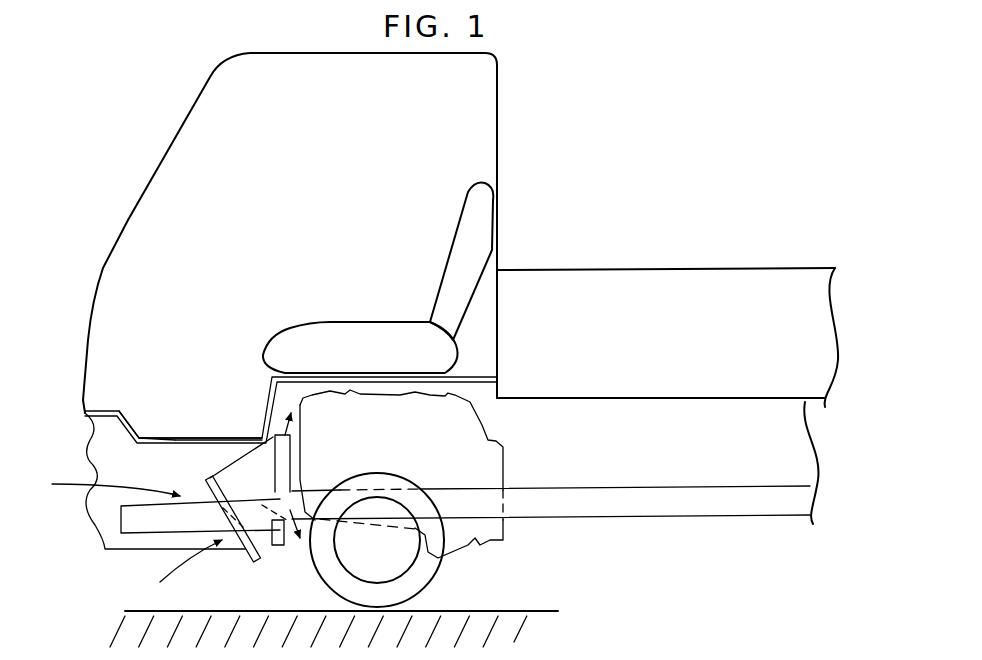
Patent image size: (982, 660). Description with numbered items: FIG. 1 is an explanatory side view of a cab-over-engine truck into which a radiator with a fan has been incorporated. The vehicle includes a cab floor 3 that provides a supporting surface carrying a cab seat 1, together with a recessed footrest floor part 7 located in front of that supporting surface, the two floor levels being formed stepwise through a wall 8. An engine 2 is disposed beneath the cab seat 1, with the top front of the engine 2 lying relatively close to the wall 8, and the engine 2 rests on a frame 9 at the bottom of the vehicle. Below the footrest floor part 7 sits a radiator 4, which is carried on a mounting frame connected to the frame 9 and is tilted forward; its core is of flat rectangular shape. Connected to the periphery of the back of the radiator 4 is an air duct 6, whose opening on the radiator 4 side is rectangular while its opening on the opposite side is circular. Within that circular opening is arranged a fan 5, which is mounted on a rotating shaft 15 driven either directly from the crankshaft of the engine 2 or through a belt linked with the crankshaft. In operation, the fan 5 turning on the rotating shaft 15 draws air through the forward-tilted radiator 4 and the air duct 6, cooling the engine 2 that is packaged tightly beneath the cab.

The cab seat 1 is at (357, 322).
The engine 2 is at (496, 441).
The cab floor 3 is at (208, 402).
The radiator 4 is at (235, 547).
The fan 5 is at (298, 545).
The air duct 6 is at (237, 440).
The footrest floor part 7 is at (172, 438).
The wall 8 is at (263, 398).
The frame 9 is at (537, 530).
The rotating shaft 15 is at (292, 478).